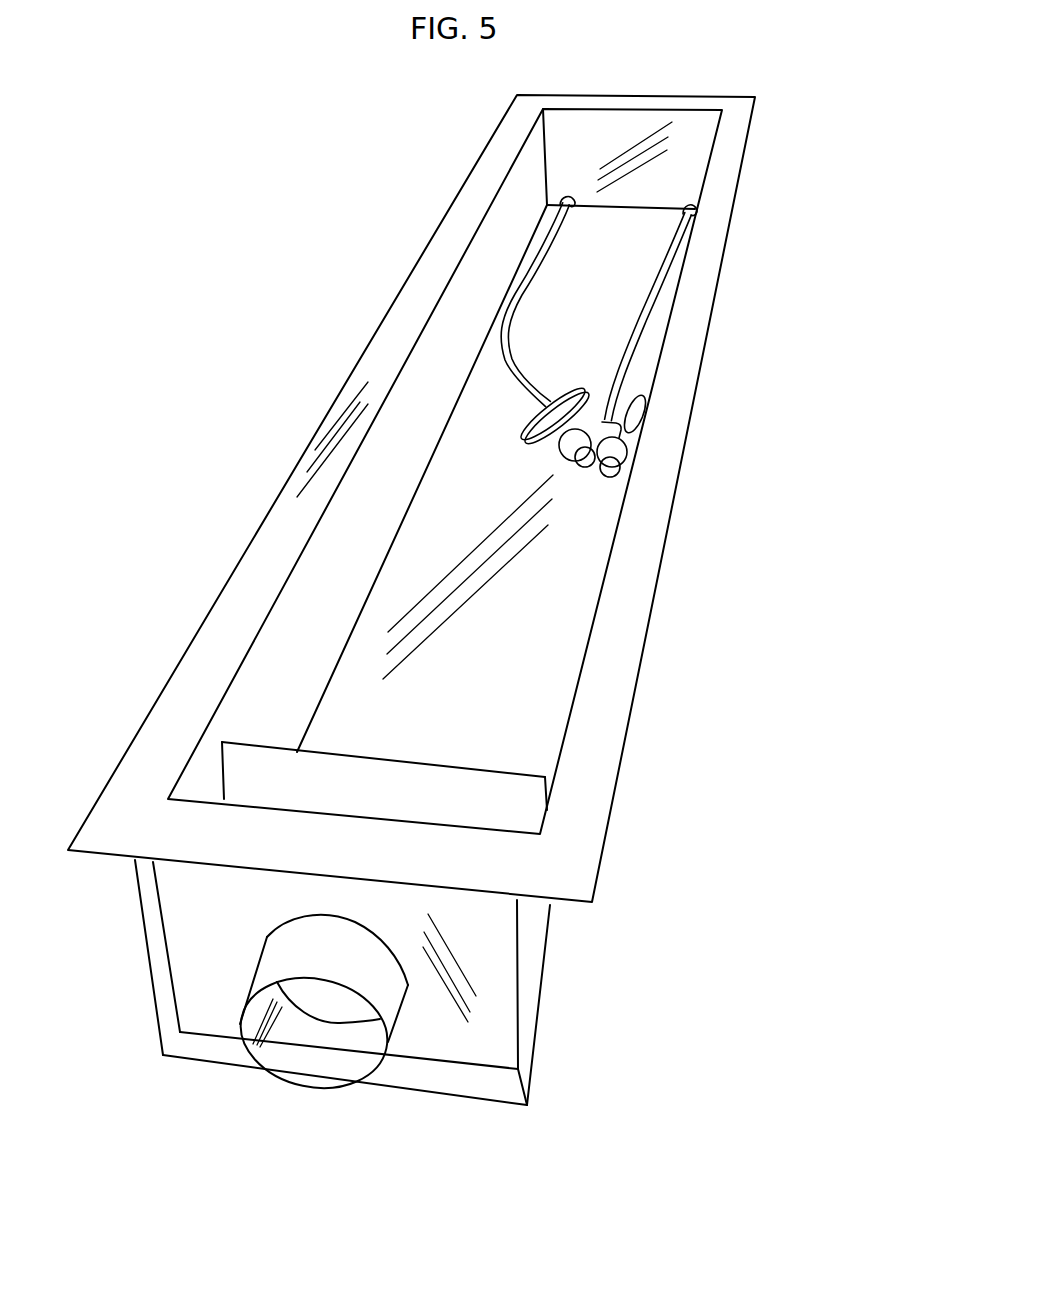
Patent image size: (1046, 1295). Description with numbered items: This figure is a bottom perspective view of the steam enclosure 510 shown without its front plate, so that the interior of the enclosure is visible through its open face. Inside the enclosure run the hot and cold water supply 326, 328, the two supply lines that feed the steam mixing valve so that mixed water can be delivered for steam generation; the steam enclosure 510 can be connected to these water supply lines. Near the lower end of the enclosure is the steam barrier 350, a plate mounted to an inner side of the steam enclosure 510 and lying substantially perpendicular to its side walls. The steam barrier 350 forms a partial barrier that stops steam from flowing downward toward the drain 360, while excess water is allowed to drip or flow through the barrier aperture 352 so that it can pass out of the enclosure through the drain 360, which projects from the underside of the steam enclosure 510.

The steam enclosure 510 is at (746, 242).
The hot water supply 326 is at (518, 326).
The cold water supply 328 is at (663, 250).
The steam barrier 350 is at (480, 762).
The barrier aperture 352 is at (212, 752).
The drain 360 is at (297, 1082).